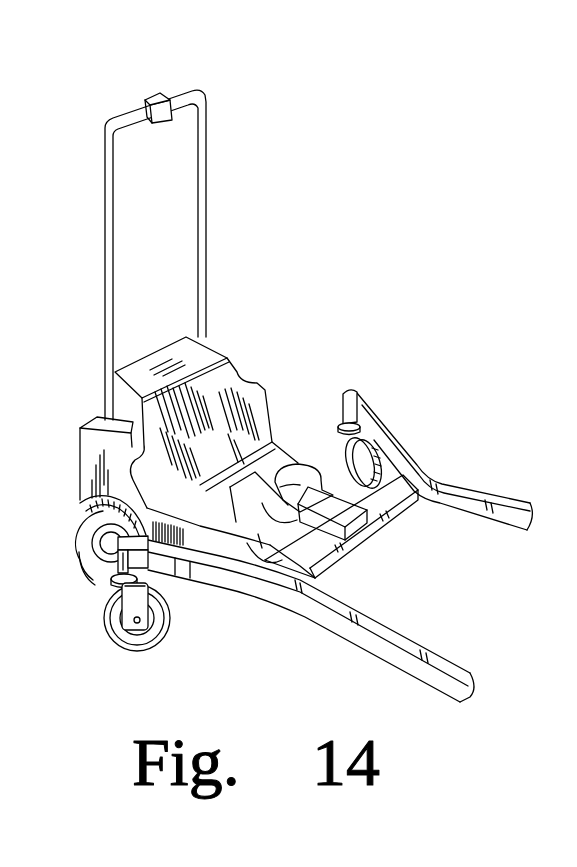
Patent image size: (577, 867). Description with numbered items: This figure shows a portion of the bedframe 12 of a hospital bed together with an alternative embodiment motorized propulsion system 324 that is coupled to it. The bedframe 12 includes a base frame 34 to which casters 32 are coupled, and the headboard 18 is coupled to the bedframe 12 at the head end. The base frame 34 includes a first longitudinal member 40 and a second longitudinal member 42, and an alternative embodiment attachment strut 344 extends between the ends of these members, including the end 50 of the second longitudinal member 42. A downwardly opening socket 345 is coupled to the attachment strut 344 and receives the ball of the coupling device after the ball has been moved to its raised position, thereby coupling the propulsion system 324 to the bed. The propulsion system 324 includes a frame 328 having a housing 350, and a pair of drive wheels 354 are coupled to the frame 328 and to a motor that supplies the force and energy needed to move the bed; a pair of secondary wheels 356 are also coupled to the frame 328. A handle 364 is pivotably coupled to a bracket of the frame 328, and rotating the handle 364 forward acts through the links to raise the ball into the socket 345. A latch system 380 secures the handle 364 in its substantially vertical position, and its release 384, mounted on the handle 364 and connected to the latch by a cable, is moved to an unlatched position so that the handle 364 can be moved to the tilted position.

The bedframe 12 is at (488, 415).
The headboard 18 is at (360, 403).
The casters 32 is at (135, 645).
The base frame 34 is at (418, 440).
The first longitudinal member 40 is at (490, 498).
The second longitudinal member 42 is at (402, 640).
The end 50 is at (172, 578).
The motorized propulsion system 324 is at (275, 330).
The frame 328 is at (83, 400).
The attachment strut 344 is at (398, 505).
The socket 345 is at (335, 500).
The housing 350 is at (256, 404).
The drive wheels 354 is at (80, 530).
The secondary wheels 356 is at (305, 573).
The handle 364 is at (207, 160).
The latch system 380 is at (170, 133).
The release 384 is at (150, 95).